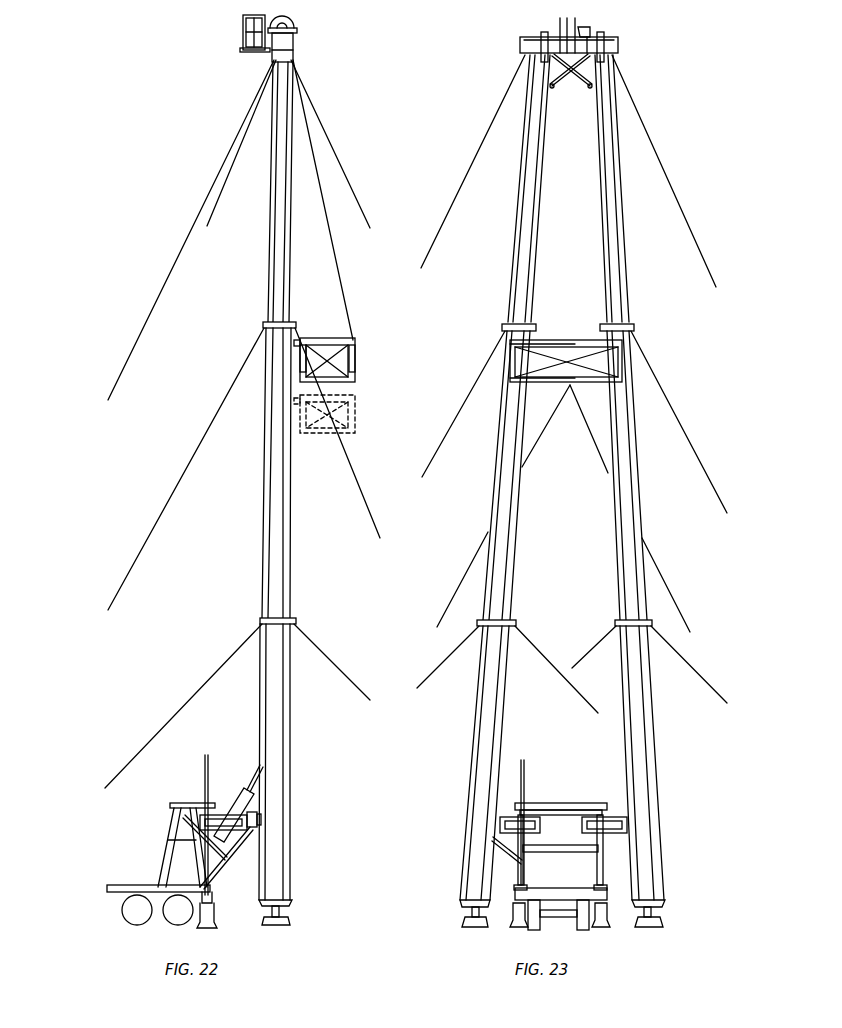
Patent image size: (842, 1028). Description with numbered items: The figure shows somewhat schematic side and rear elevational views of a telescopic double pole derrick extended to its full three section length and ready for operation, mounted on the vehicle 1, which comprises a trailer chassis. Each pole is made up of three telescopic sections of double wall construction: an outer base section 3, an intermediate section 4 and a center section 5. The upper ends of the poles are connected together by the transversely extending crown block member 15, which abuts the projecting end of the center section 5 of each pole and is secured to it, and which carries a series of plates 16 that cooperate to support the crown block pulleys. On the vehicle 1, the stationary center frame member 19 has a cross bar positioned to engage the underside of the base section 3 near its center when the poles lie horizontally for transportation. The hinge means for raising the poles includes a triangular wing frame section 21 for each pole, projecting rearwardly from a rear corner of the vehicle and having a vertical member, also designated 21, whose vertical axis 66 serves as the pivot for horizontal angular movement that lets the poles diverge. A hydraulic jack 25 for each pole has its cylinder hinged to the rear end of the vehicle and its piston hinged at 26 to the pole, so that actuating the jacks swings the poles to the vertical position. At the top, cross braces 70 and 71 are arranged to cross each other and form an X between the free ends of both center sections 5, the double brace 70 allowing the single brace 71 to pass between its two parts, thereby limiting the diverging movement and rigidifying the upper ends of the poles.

In FIG. 23, the vehicle 1 is at (540, 895).
In FIG. 22, the outer base section 3 is at (275, 774).
In FIG. 23, the outer base section 3 is at (562, 776).
In FIG. 22, the intermediate section 4 is at (276, 473).
In FIG. 23, the intermediate section 4 is at (565, 475).
In FIG. 22, the center section 5 is at (280, 192).
In FIG. 23, the center section 5 is at (568, 188).
In FIG. 22, the crown block member 15 is at (295, 28).
In FIG. 23, the crown block member 15 is at (520, 44).
In FIG. 23, the plates 16 is at (555, 38).
In FIG. 22, the center frame member 19 is at (167, 855).
In FIG. 22, the wing frame section 21 is at (203, 855).
In FIG. 23, the wing frame section 21 is at (600, 873).
In FIG. 22, the hydraulic jack 25 is at (210, 790).
In FIG. 23, the hydraulic jack 25 is at (563, 825).
In FIG. 22, the piston hinge 26 is at (258, 768).
In FIG. 22, the vertical axis 66 is at (205, 785).
In FIG. 23, the vertical axis 66 is at (537, 789).
In FIG. 23, the cross brace 70 is at (571, 69).
In FIG. 23, the cross brace 71 is at (556, 86).